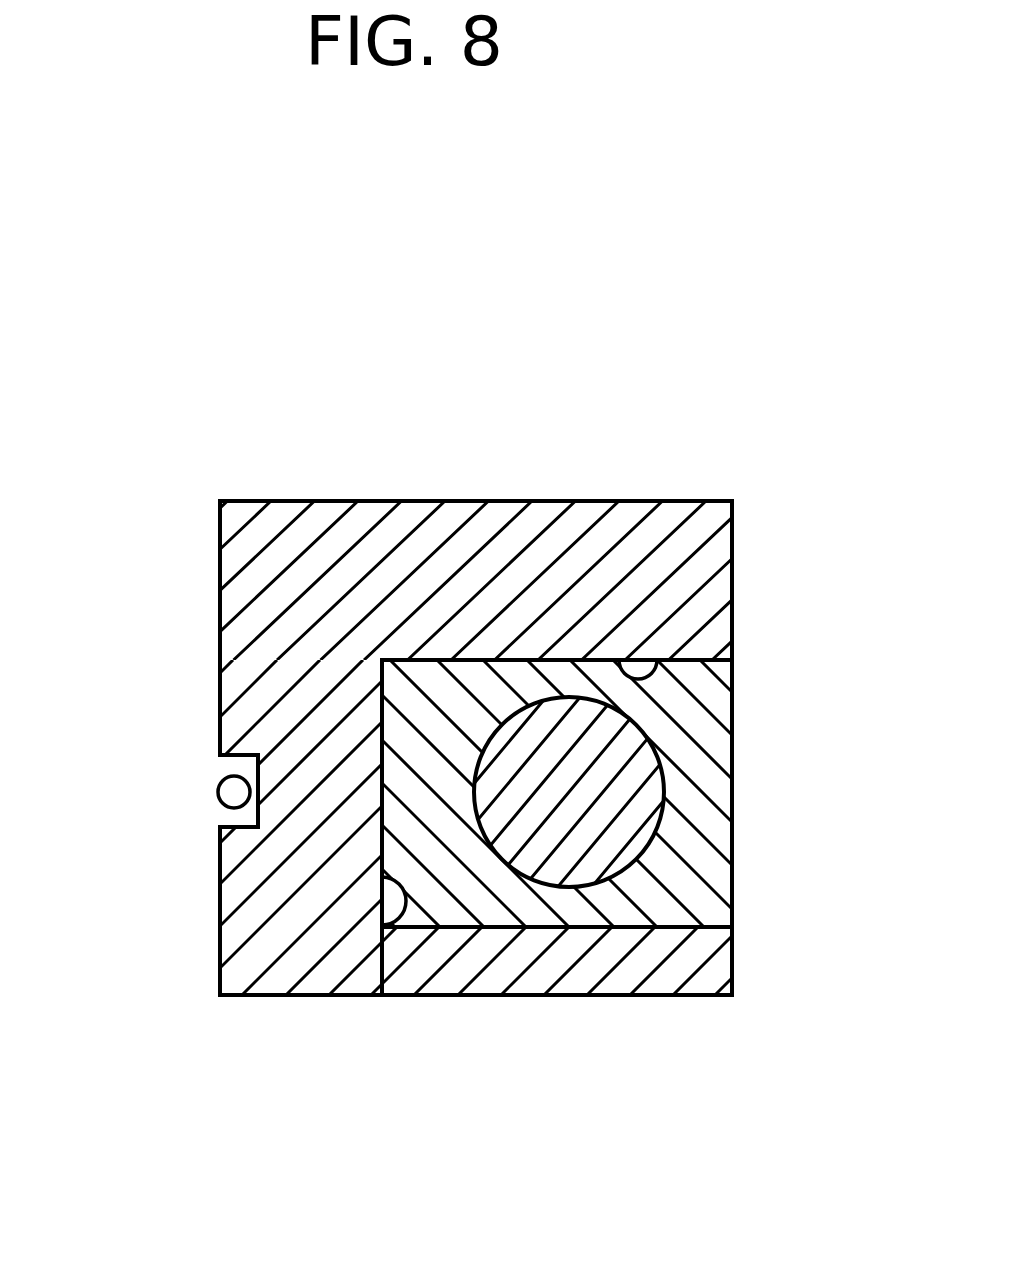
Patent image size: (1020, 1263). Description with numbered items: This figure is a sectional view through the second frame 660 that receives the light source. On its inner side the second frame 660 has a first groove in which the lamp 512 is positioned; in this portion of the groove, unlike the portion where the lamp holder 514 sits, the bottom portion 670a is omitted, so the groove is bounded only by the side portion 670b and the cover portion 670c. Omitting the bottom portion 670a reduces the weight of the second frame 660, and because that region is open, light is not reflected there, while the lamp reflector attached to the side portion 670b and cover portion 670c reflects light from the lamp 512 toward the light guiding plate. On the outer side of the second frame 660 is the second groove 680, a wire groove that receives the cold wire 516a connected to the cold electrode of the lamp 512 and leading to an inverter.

The second frame 660 is at (583, 518).
The bottom portion 670a is at (633, 930).
The side portion 670b is at (390, 878).
The cover portion 670c is at (673, 660).
The lamp holder 514 is at (707, 703).
The lamp 512 is at (645, 785).
The second groove 680 is at (217, 767).
The cold wire 516a is at (232, 805).